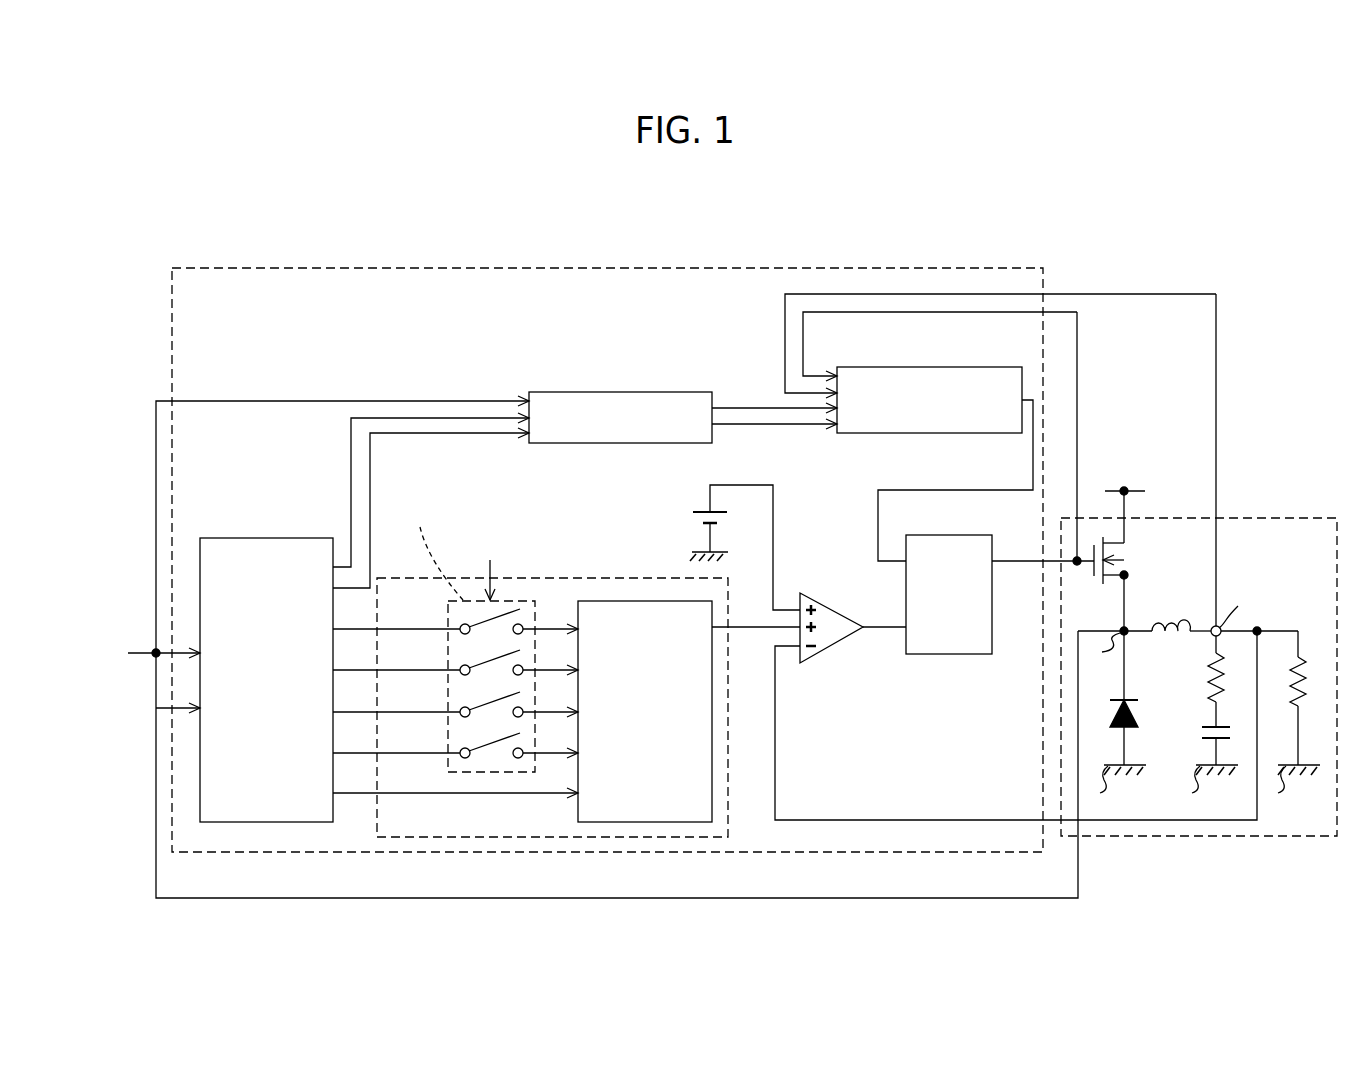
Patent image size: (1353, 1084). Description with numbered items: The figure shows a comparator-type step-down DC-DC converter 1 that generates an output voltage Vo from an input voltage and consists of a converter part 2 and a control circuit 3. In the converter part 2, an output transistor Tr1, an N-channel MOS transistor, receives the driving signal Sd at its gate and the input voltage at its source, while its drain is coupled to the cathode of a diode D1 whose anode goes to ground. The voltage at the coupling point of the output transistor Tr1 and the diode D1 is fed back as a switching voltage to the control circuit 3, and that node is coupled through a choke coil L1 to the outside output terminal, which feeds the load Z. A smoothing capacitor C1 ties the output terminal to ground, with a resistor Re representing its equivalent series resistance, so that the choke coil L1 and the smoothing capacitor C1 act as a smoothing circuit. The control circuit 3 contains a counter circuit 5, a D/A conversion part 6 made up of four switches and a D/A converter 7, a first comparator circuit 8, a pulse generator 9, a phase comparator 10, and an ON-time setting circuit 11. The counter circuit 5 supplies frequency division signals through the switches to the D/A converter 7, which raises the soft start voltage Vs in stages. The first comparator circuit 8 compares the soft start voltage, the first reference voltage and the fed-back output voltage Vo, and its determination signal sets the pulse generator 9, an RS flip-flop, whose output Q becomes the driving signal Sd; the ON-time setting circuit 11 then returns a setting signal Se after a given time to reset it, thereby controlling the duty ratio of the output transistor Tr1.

The DC-DC converter 1 is at (657, 226).
The converter part 2 is at (1290, 518).
The control circuit 3 is at (763, 268).
The counter circuit 5 is at (222, 538).
The D/A conversion part 6 is at (580, 578).
The D/A converter 7 is at (628, 601).
The first comparator circuit 8 is at (830, 611).
The pulse generator 9 is at (957, 535).
The phase comparator 10 is at (634, 392).
The ON-time setting circuit 11 is at (853, 433).
The output transistor Tr1 is at (1112, 558).
The choke coil L1 is at (1171, 622).
The diode D1 is at (1136, 712).
The resistor Re is at (1209, 672).
The smoothing capacitor C1 is at (1208, 740).
The load Z is at (1302, 672).